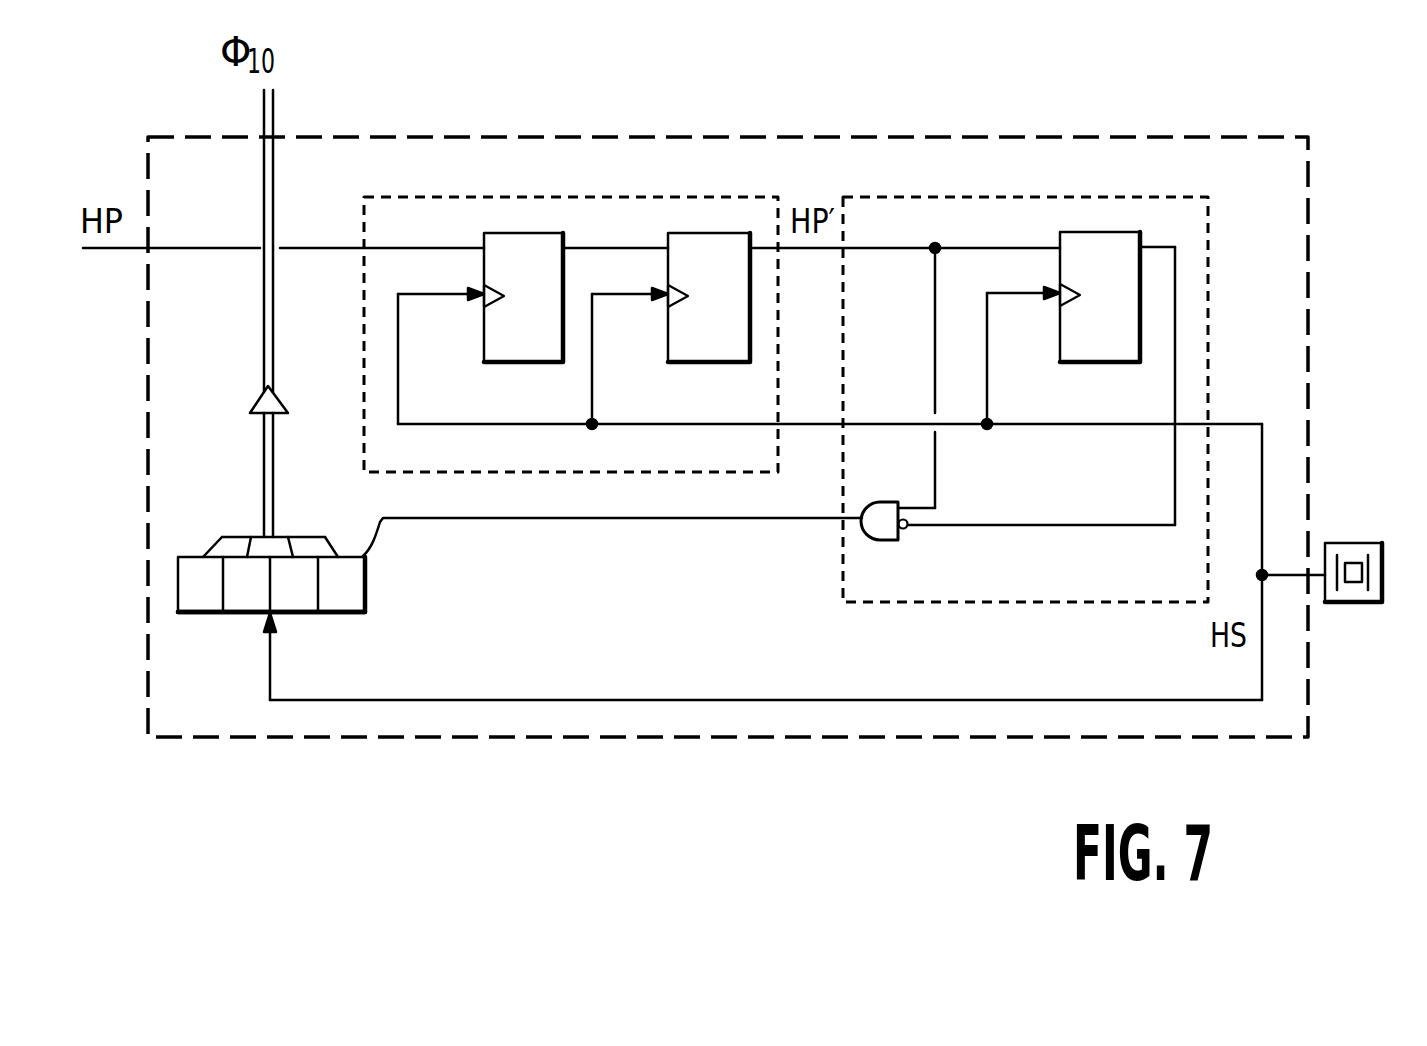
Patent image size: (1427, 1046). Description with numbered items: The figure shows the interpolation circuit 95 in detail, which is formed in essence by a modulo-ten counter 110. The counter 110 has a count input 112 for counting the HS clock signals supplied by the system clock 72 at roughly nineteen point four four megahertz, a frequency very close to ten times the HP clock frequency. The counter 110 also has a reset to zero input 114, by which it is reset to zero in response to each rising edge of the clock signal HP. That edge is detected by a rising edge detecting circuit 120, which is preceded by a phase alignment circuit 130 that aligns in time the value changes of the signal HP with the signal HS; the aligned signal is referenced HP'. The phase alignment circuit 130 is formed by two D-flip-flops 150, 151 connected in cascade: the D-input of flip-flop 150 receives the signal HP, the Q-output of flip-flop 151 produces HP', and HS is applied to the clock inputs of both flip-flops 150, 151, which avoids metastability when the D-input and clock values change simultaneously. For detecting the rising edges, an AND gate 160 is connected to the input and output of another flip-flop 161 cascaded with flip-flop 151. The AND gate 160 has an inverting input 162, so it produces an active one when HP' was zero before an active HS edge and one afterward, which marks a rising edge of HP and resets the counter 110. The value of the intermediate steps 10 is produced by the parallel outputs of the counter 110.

The intermediate steps 10 is at (268, 585).
The system clock 72 is at (1360, 605).
The interpolation circuit 95 is at (505, 738).
The modulo-10 counter 110 is at (366, 590).
The count input 112 is at (238, 612).
The reset to zero input 114 is at (365, 553).
The rising edge detecting circuit 120 is at (1030, 603).
The phase alignment circuit 130 is at (364, 370).
The D-flip-flop 150 is at (505, 362).
The D-flip-flop 151 is at (692, 362).
The AND gate 160 is at (870, 540).
The flip-flop 161 is at (1097, 362).
The inverting input 162 is at (908, 530).